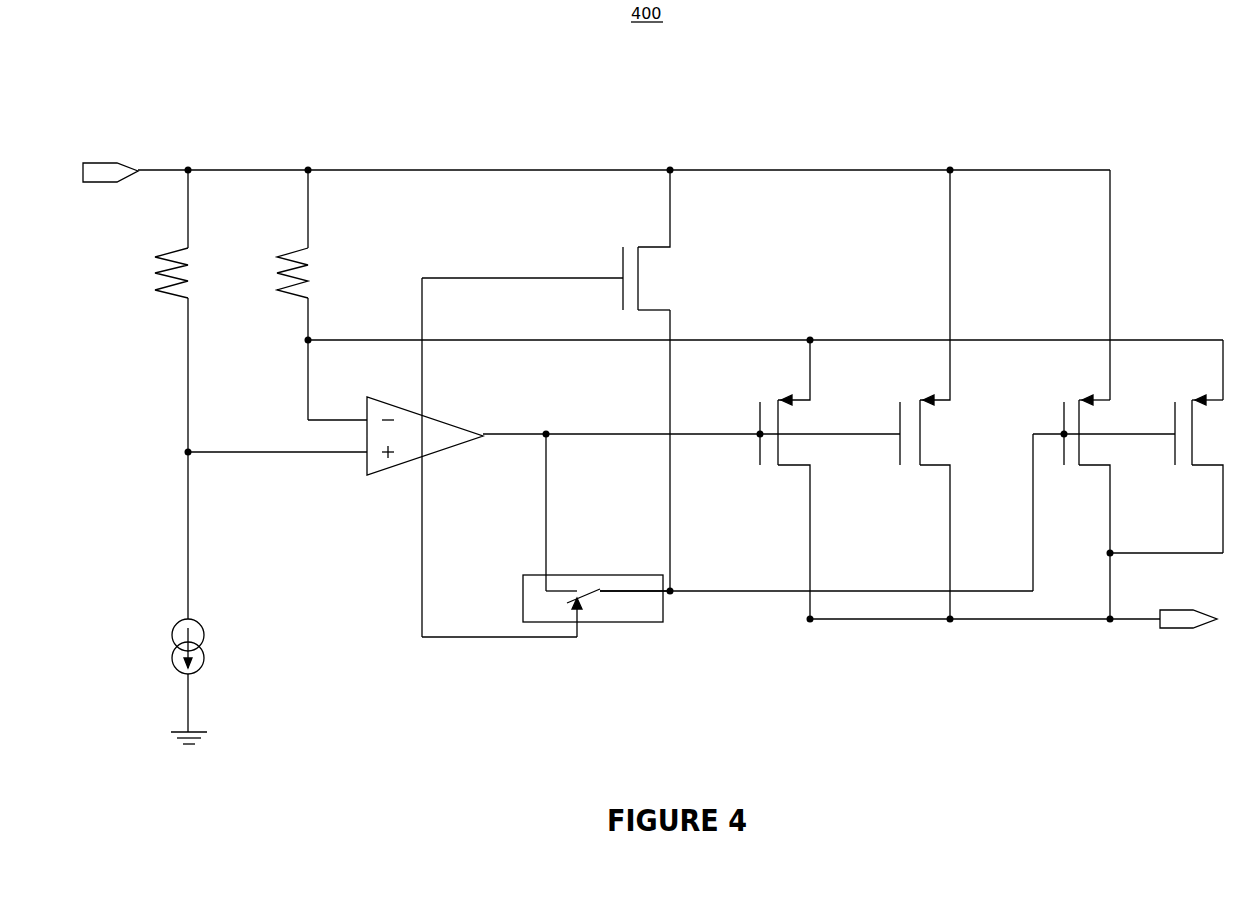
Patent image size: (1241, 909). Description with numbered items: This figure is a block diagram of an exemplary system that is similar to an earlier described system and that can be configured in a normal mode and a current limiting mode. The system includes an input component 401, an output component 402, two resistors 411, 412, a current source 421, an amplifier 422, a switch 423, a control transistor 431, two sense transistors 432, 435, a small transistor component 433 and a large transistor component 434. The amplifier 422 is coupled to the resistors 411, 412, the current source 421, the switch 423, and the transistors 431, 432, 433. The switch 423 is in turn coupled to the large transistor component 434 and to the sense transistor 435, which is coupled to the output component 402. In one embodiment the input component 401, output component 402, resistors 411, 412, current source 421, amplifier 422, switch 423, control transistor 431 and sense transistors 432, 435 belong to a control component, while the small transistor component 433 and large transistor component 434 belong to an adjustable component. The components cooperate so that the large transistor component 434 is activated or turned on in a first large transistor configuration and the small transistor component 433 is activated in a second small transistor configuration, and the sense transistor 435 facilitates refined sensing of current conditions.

The input component 401 is at (75, 170).
The output component 402 is at (1155, 625).
The resistor 411 is at (148, 286).
The resistor 412 is at (268, 286).
The current source 421 is at (163, 651).
The amplifier 422 is at (356, 408).
The switch 423 is at (519, 596).
The control transistor 431 is at (612, 266).
The sense transistor 432 is at (756, 413).
The small transistor component 433 is at (896, 413).
The large transistor component 434 is at (1056, 412).
The sense transistor 435 is at (1169, 410).